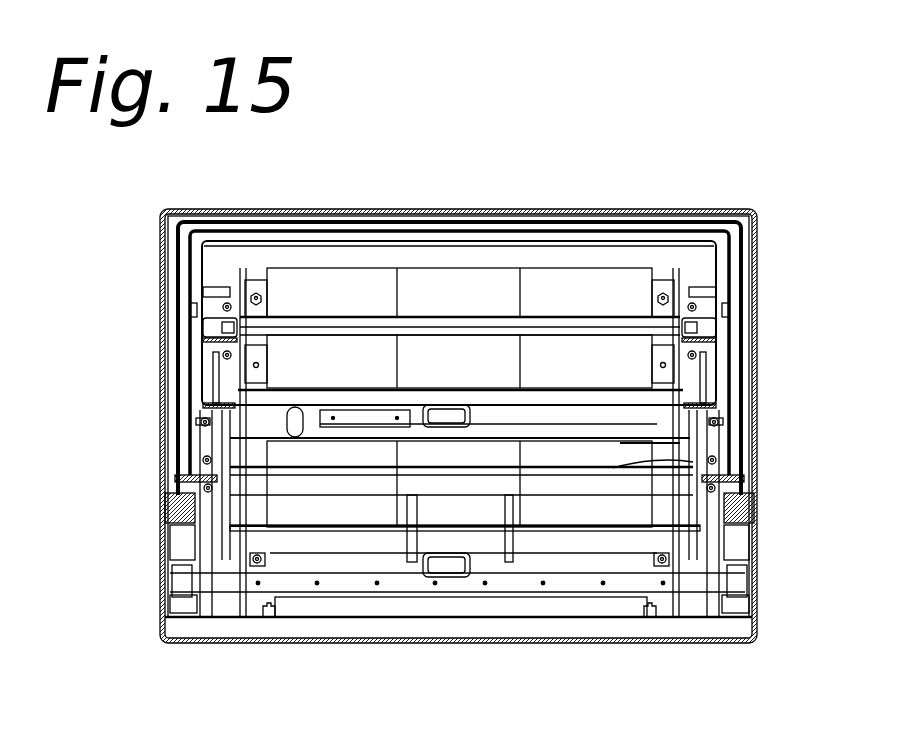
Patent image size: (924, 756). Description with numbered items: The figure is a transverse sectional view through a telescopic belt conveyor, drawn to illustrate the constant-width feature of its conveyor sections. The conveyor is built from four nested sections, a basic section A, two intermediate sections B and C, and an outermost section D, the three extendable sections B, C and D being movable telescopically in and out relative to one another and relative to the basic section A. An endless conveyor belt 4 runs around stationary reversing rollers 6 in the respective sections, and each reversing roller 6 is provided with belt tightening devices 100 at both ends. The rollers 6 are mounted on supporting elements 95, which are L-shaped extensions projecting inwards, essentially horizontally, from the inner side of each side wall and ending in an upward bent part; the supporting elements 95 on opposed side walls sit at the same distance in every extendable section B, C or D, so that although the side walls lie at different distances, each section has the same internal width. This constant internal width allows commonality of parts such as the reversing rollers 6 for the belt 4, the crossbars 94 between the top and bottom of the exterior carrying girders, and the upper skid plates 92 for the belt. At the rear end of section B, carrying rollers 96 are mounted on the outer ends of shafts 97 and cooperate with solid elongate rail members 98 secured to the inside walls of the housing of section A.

The endless conveyor belt 4 is at (342, 210).
The reversing rollers 6 is at (443, 353).
The upper skid plates 92 is at (295, 240).
The crossbars 94 is at (537, 237).
The supporting elements 95 is at (223, 323).
The carrying rollers 96 is at (183, 540).
The shafts 97 is at (338, 565).
The rail members 98 is at (167, 513).
The belt tightening devices 100 is at (662, 283).
The basic section A is at (764, 636).
The intermediate section B is at (750, 387).
The intermediate section C is at (738, 285).
The outermost section D is at (716, 237).